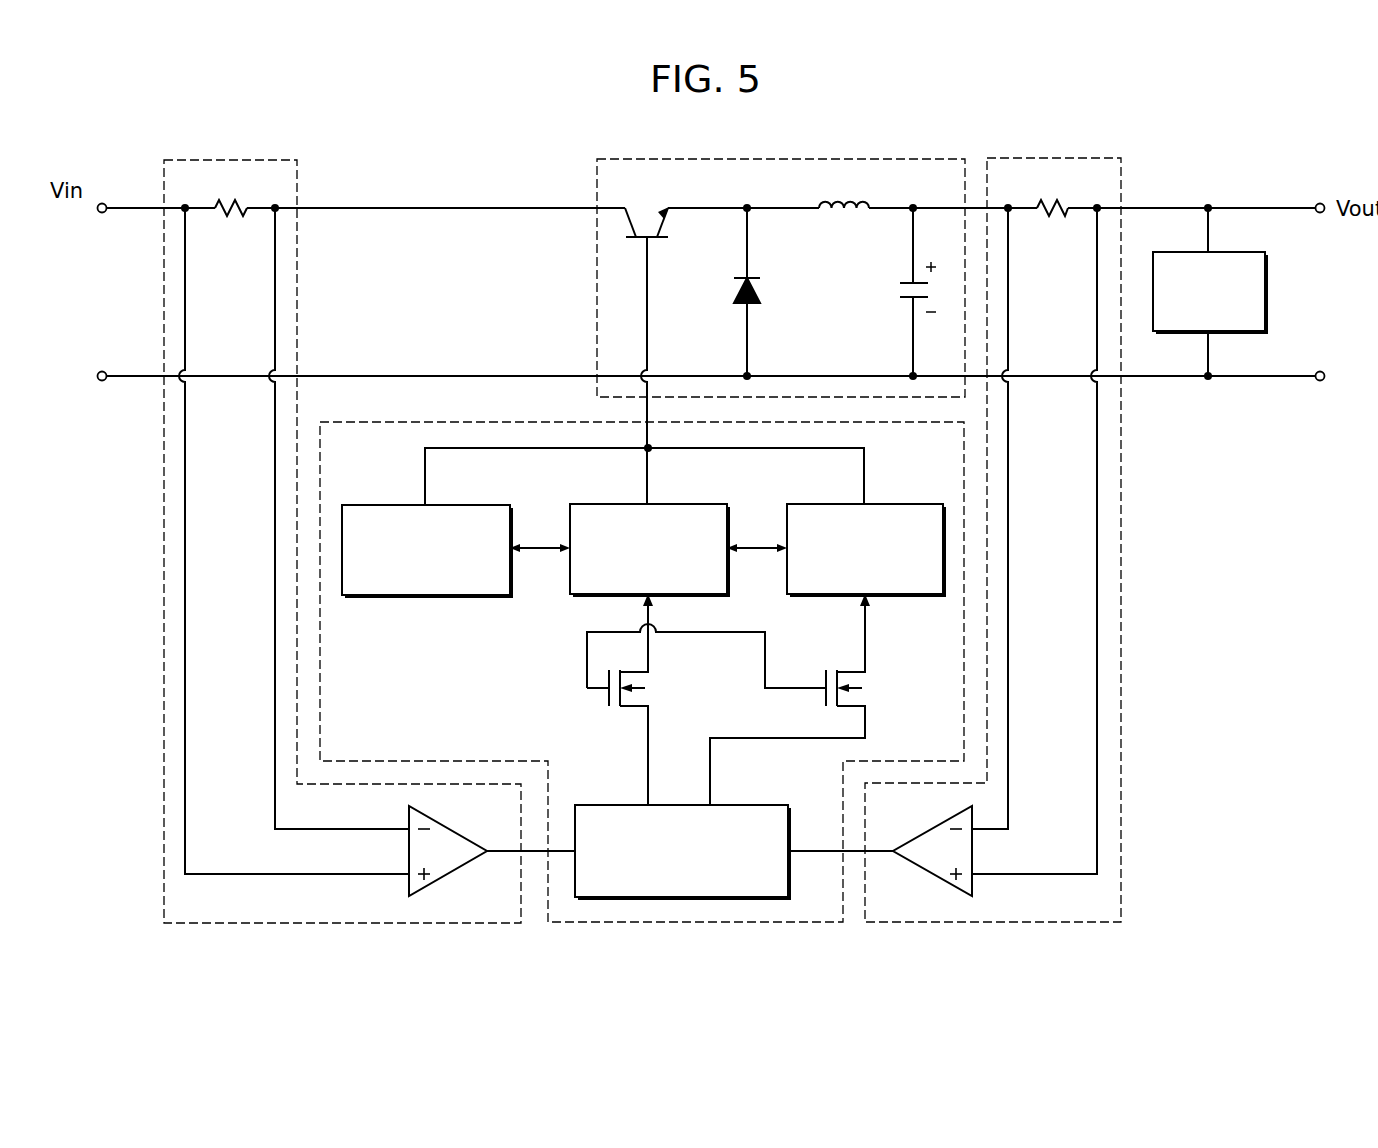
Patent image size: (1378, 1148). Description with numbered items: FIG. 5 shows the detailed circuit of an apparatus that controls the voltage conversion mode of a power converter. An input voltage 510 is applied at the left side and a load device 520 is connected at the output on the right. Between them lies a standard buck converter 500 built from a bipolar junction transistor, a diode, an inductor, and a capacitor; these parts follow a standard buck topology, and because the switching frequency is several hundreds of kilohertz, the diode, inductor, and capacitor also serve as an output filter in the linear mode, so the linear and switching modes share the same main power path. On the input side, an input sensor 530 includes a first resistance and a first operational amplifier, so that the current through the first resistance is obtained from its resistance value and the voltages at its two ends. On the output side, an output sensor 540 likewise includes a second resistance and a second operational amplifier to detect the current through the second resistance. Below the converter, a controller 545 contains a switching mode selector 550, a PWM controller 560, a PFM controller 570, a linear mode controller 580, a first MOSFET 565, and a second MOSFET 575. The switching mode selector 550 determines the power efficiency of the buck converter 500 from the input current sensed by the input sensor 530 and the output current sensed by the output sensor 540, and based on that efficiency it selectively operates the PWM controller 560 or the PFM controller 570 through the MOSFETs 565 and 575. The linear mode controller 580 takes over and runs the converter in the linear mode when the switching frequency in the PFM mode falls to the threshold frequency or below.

The standard buck converter 500 is at (777, 158).
The input voltage Vin 510 is at (70, 217).
The device (load) 520 is at (1235, 250).
The input sensor 530 is at (232, 158).
The output sensor 540 is at (1055, 157).
The controller 545 is at (460, 421).
The switching mode selector 550 is at (735, 803).
The PWM controller 560 is at (890, 503).
The first metal-oxide-semiconductor field-effect transistor (MOSFET) 565 is at (865, 683).
The PFM controller 570 is at (673, 503).
The second MOSFET 575 is at (648, 683).
The linear mode controller 580 is at (452, 504).